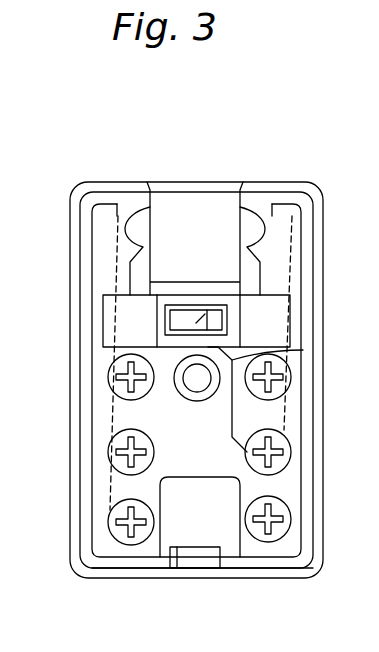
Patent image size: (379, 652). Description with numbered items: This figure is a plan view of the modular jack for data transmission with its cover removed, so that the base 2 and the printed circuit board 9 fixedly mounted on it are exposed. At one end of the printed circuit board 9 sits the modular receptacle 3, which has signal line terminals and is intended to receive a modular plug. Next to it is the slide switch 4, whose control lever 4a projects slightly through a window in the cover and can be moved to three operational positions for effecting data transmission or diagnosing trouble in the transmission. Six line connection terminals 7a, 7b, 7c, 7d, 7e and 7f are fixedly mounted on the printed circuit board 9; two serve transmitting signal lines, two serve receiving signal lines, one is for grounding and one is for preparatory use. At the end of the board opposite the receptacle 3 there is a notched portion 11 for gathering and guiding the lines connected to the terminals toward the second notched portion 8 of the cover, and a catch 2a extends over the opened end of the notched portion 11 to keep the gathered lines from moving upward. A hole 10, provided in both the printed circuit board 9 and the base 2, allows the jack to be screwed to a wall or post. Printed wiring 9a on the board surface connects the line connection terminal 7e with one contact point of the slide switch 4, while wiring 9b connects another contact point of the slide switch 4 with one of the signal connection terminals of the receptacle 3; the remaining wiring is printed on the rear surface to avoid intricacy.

The base 2 is at (110, 182).
The catch 2a is at (183, 563).
The modular receptacle 3 is at (208, 208).
The slide switch 4 is at (113, 308).
The control lever 4a is at (193, 318).
The line connection terminal 7a is at (110, 532).
The line connection terminal 7b is at (110, 462).
The line connection terminal 7c is at (112, 371).
The line connection terminal 7d is at (290, 510).
The line connection terminal 7e is at (290, 453).
The line connection terminal 7f is at (290, 372).
The second notched portion 8 is at (193, 560).
The printed circuit board 9 is at (292, 418).
The wiring 9a is at (303, 350).
The wiring 9b is at (128, 253).
The hole 10 is at (190, 382).
The notched portion 11 is at (227, 540).